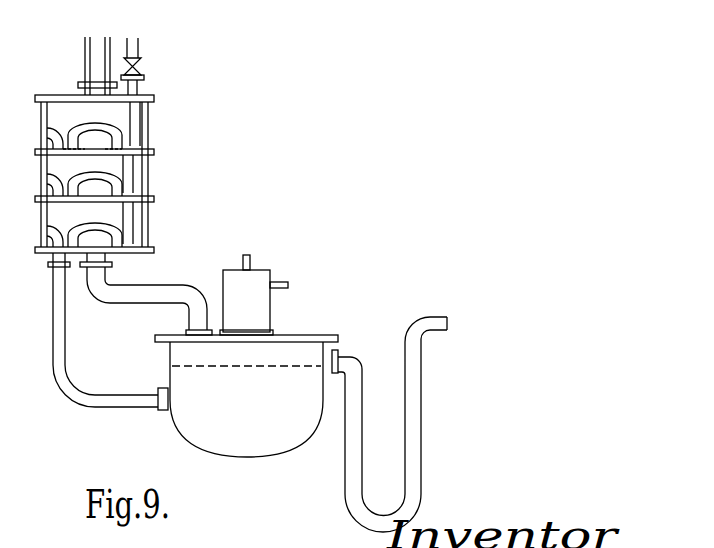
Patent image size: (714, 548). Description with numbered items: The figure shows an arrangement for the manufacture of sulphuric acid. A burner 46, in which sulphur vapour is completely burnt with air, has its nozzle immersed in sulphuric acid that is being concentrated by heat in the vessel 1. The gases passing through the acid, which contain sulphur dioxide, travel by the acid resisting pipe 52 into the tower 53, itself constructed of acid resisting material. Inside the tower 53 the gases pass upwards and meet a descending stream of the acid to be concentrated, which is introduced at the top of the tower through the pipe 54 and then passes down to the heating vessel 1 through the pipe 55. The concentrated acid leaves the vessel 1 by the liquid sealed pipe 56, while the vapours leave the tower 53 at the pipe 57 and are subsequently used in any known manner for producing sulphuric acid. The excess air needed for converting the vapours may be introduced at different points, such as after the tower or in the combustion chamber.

The vessel 1 is at (253, 443).
The burner 46 is at (247, 287).
The acid resisting pipe 52 is at (153, 292).
The tower 53 is at (145, 168).
The pipe 54 is at (104, 68).
The pipe 55 is at (132, 402).
The liquid sealed pipe 56 is at (352, 358).
The pipe 57 is at (105, 47).